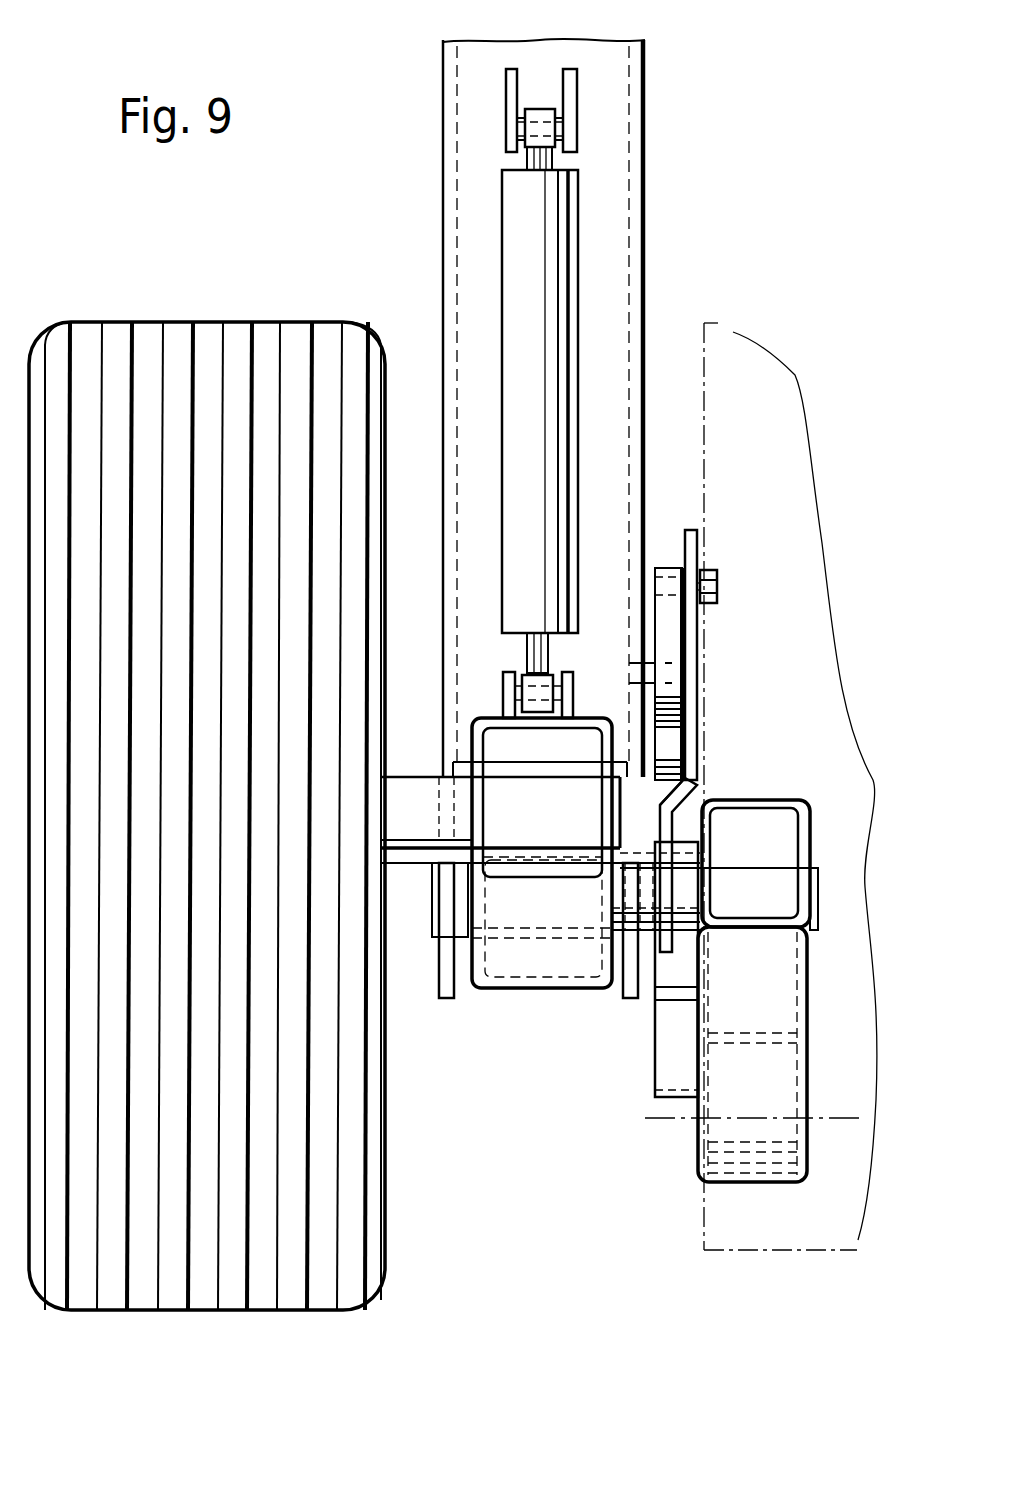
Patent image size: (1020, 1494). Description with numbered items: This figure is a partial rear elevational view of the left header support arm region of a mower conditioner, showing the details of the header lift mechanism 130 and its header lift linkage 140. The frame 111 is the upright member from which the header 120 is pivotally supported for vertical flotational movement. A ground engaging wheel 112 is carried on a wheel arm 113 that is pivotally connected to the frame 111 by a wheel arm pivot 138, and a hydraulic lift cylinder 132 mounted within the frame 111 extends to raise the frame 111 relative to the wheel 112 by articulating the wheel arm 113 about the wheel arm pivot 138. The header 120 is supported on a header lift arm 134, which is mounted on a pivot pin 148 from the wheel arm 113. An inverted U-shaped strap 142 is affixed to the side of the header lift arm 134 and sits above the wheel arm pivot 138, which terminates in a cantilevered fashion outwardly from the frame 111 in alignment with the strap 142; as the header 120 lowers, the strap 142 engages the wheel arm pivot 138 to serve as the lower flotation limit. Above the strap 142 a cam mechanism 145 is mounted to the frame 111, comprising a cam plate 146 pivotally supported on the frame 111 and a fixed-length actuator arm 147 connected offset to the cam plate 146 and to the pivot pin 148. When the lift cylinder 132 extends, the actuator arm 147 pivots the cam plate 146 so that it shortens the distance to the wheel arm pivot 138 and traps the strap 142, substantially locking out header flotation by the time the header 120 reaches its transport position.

The frame 111 is at (644, 133).
The ground engaging wheel 112 is at (175, 322).
The wheel arm 113 is at (528, 880).
The header 120 is at (762, 347).
The header lift mechanism 130 is at (691, 331).
The hydraulic lift cylinder 132 is at (560, 253).
The header lift arm 134 is at (750, 1088).
The wheel arm pivot 138 is at (430, 905).
The header lift linkage 140 is at (622, 1012).
The inverted U-shaped strap 142 is at (673, 1053).
The cam mechanism 145 is at (730, 556).
The cam plate 146 is at (670, 632).
The actuator arm 147 is at (697, 783).
The pivot pin 148 is at (753, 885).